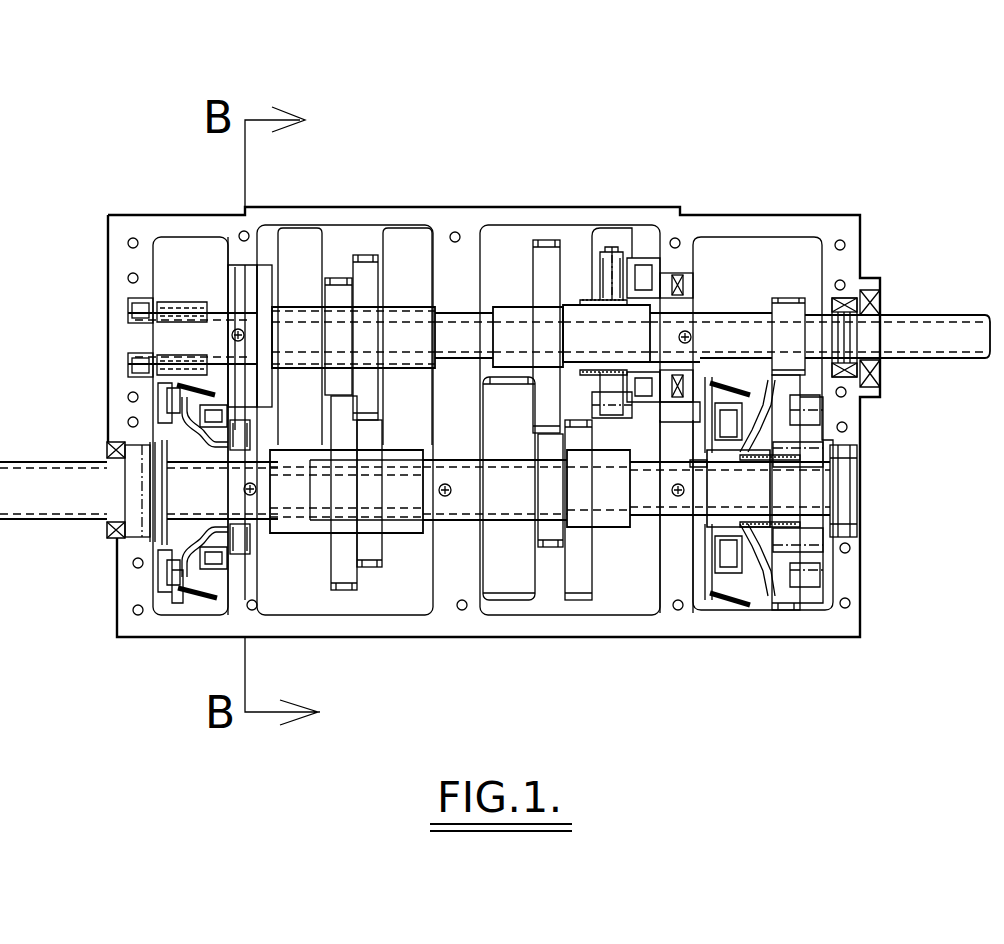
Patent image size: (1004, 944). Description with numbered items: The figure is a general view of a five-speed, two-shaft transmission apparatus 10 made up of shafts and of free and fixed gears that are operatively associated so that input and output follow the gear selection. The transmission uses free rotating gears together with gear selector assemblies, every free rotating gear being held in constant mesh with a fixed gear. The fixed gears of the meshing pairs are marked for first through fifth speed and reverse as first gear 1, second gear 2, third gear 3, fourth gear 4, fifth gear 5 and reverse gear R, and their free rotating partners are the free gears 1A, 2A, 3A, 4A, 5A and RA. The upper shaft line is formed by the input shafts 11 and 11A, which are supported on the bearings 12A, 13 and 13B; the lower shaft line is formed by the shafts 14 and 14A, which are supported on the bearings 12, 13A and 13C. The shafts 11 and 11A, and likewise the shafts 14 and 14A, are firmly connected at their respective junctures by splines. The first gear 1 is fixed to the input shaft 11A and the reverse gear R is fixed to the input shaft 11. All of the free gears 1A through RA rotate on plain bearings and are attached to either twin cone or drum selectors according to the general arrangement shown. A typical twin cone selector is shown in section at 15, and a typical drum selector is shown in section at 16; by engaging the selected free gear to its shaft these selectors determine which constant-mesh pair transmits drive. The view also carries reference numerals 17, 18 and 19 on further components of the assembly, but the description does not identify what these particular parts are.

The transmission apparatus 10 is at (855, 156).
The first gear 1 is at (186, 318).
The first free gear 1A is at (184, 596).
The second gear 2 is at (613, 530).
The second free gear 2A is at (582, 280).
The third gear 3 is at (340, 575).
The third free gear 3A is at (338, 280).
The fourth gear 4 is at (390, 560).
The fourth free gear 4A is at (365, 258).
The fifth gear 5 is at (547, 245).
The fifth free gear 5A is at (553, 548).
The input shaft 11 is at (720, 310).
The input shaft 11A is at (405, 302).
The bearing 12 is at (430, 540).
The bearing 12A is at (493, 285).
The bearing 13 is at (131, 306).
The bearing 13A is at (135, 452).
The bearing 13B is at (863, 378).
The bearing 13C is at (855, 455).
The shaft 14 is at (322, 555).
The shaft 14A is at (637, 527).
The twin cone selector 15 is at (200, 606).
The drum selector 16 is at (615, 252).
The housing wall 17 is at (222, 284).
The hub 18 is at (300, 533).
The bearing ring 19 is at (258, 232).
The reverse gear R is at (787, 298).
The reverse free gear RA is at (790, 603).